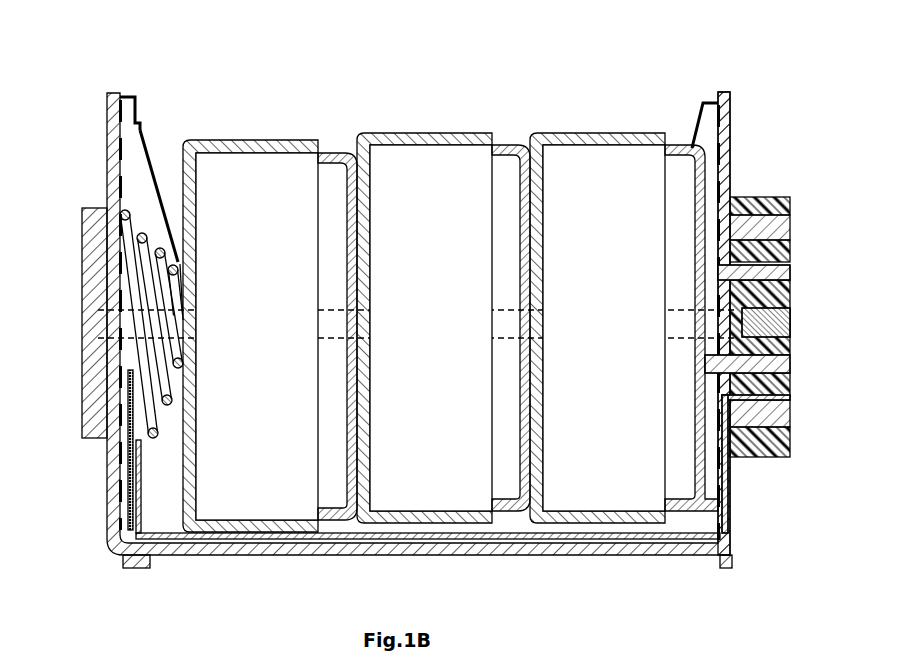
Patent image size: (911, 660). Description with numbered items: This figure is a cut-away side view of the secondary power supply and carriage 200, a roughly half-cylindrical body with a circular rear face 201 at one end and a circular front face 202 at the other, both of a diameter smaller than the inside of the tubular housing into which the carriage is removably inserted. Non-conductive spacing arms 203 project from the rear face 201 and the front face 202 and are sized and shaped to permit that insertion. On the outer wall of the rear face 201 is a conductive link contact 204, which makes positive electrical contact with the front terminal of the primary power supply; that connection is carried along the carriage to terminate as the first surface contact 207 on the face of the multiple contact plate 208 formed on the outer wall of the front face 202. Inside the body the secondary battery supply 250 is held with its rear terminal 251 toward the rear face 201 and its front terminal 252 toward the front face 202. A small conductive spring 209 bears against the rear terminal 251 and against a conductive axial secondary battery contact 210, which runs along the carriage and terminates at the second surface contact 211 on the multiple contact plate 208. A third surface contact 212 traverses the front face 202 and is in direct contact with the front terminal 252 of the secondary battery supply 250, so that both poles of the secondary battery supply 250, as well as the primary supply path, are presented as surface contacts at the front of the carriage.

The secondary power supply and carriage 200 is at (250, 62).
The rear face 201 is at (107, 178).
The front face 202 is at (730, 493).
The non-conductive spacing arms 203 is at (122, 93).
The conductive link contact 204 is at (82, 303).
The first surface contact 207 is at (790, 326).
The multiple contact plate 208 is at (760, 440).
The conductive spring 209 is at (140, 217).
The conductive axial secondary battery contact 210 is at (167, 530).
The second surface contact 211 is at (790, 226).
The third surface contact 212 is at (790, 268).
The secondary battery supply 250 is at (270, 178).
The rear terminal 251 is at (210, 465).
The front terminal 252 is at (335, 473).